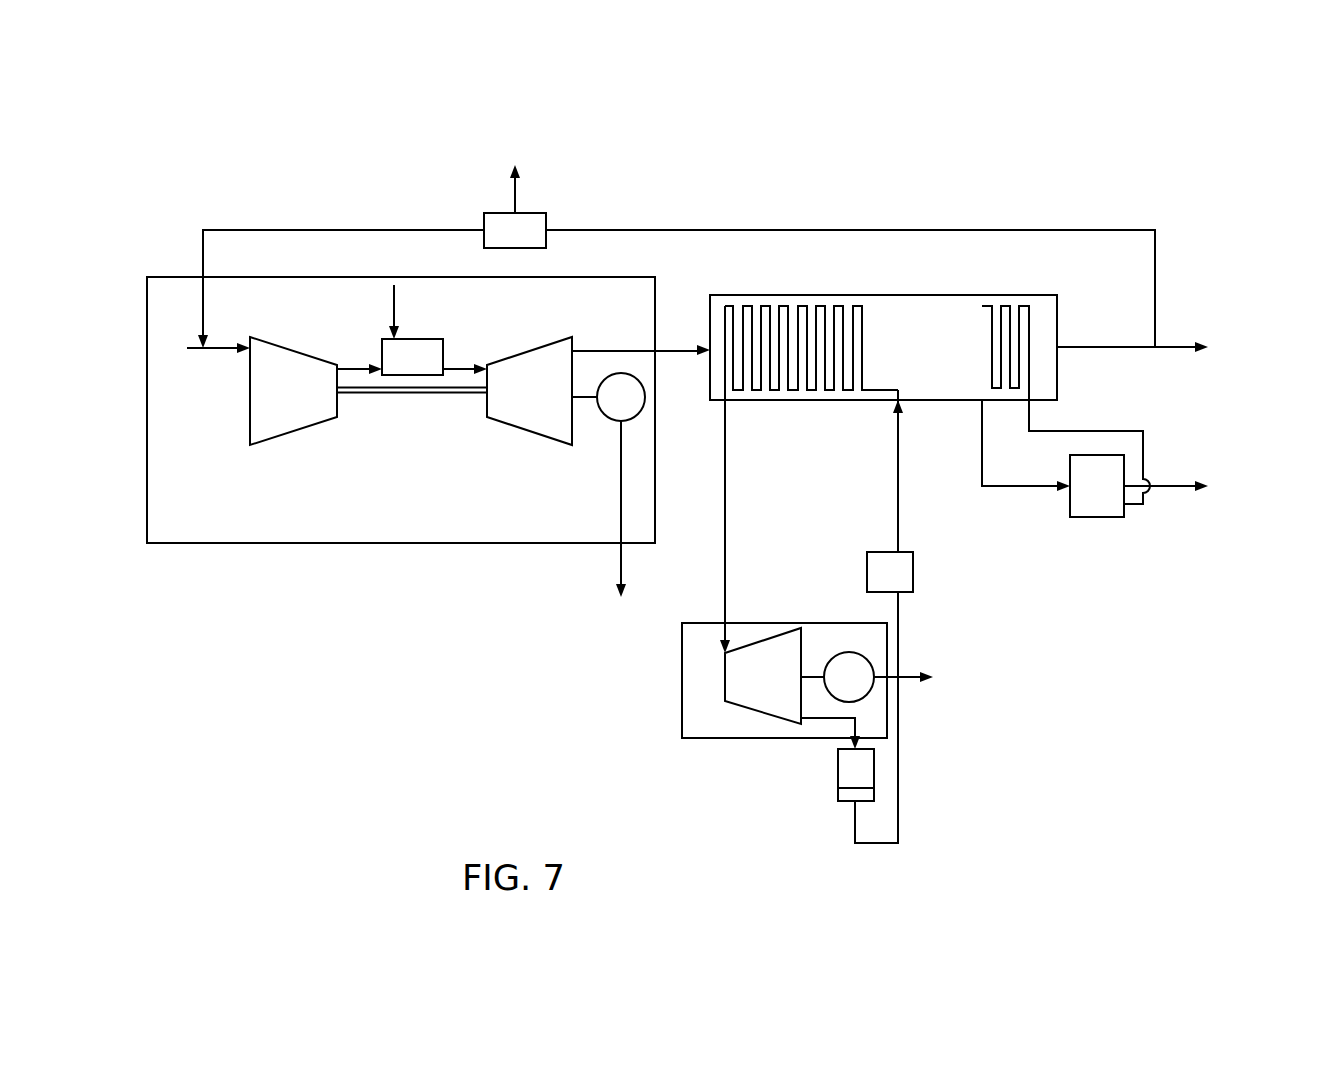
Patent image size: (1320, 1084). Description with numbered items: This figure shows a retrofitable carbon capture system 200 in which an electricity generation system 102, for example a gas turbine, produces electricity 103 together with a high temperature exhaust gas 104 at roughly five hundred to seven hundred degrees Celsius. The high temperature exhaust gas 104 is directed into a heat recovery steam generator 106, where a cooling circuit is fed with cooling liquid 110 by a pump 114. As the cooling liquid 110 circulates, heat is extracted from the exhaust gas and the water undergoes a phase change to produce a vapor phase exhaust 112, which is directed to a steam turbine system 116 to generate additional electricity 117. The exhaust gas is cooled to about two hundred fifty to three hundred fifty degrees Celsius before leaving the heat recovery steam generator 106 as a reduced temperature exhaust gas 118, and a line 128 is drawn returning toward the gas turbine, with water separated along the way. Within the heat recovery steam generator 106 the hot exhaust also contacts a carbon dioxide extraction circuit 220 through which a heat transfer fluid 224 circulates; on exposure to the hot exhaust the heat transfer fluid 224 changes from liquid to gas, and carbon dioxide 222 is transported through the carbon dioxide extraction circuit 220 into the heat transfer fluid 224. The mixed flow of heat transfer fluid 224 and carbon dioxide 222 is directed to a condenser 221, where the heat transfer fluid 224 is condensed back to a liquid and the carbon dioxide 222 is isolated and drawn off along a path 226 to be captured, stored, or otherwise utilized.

The retrofitable carbon capture system 200 is at (1176, 129).
The electricity generation system 102 is at (370, 544).
The electricity 103 is at (620, 560).
The high temperature exhaust gas 104 is at (604, 350).
The heat recovery steam generator 106 is at (754, 294).
The cooling liquid 110 is at (899, 502).
The vapor phase exhaust 112 is at (726, 513).
The pump 114 is at (913, 572).
The steam turbine system 116 is at (682, 686).
The additional electricity 117 is at (912, 680).
The reduced temperature exhaust gas 118 is at (1178, 349).
The exhaust gas recirculation line 128 is at (746, 229).
The carbon dioxide extraction circuit 220 is at (1006, 305).
The condenser 221 is at (1117, 497).
The carbon dioxide 222 is at (1020, 500).
The heat transfer fluid 224 is at (1131, 542).
The path 226 is at (1184, 490).